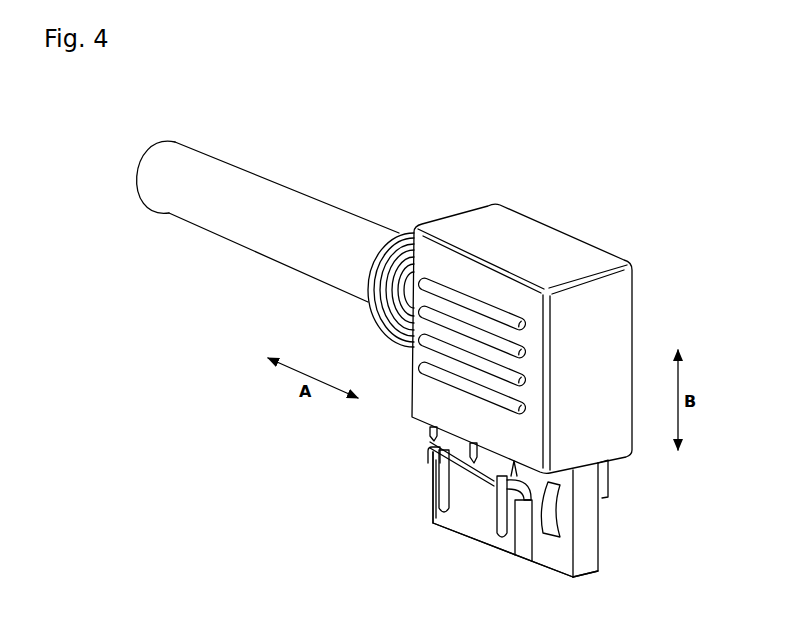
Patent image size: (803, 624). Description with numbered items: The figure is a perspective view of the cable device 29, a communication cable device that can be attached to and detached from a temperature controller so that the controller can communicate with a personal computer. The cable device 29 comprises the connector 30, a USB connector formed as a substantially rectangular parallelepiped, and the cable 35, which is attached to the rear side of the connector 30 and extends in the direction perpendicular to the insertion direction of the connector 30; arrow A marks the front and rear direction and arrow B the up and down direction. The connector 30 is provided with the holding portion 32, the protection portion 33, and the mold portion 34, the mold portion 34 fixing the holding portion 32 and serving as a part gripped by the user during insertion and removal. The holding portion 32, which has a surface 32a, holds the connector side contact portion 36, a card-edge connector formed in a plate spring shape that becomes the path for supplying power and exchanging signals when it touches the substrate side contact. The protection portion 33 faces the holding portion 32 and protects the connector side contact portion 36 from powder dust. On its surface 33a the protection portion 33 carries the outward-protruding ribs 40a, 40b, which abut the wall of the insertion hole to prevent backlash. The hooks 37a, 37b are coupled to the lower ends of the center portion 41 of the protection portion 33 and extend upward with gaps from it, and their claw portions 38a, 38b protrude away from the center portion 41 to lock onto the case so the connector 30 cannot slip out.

The cable device 29 is at (566, 187).
The connector 30 is at (637, 319).
The holding portion 32 is at (587, 533).
The surface 32a is at (563, 558).
The protection portion 33 is at (484, 550).
The surface 33a is at (446, 520).
The mold portion 34 is at (590, 422).
The cable 35 is at (264, 235).
The connector side contact portion 36 is at (550, 540).
The hook 37a is at (437, 482).
The hook 37b is at (512, 517).
The claw portion 38a is at (432, 458).
The claw portion 38b is at (557, 504).
The rib 40a is at (467, 475).
The rib 40b is at (430, 433).
The center portion 41 is at (470, 503).